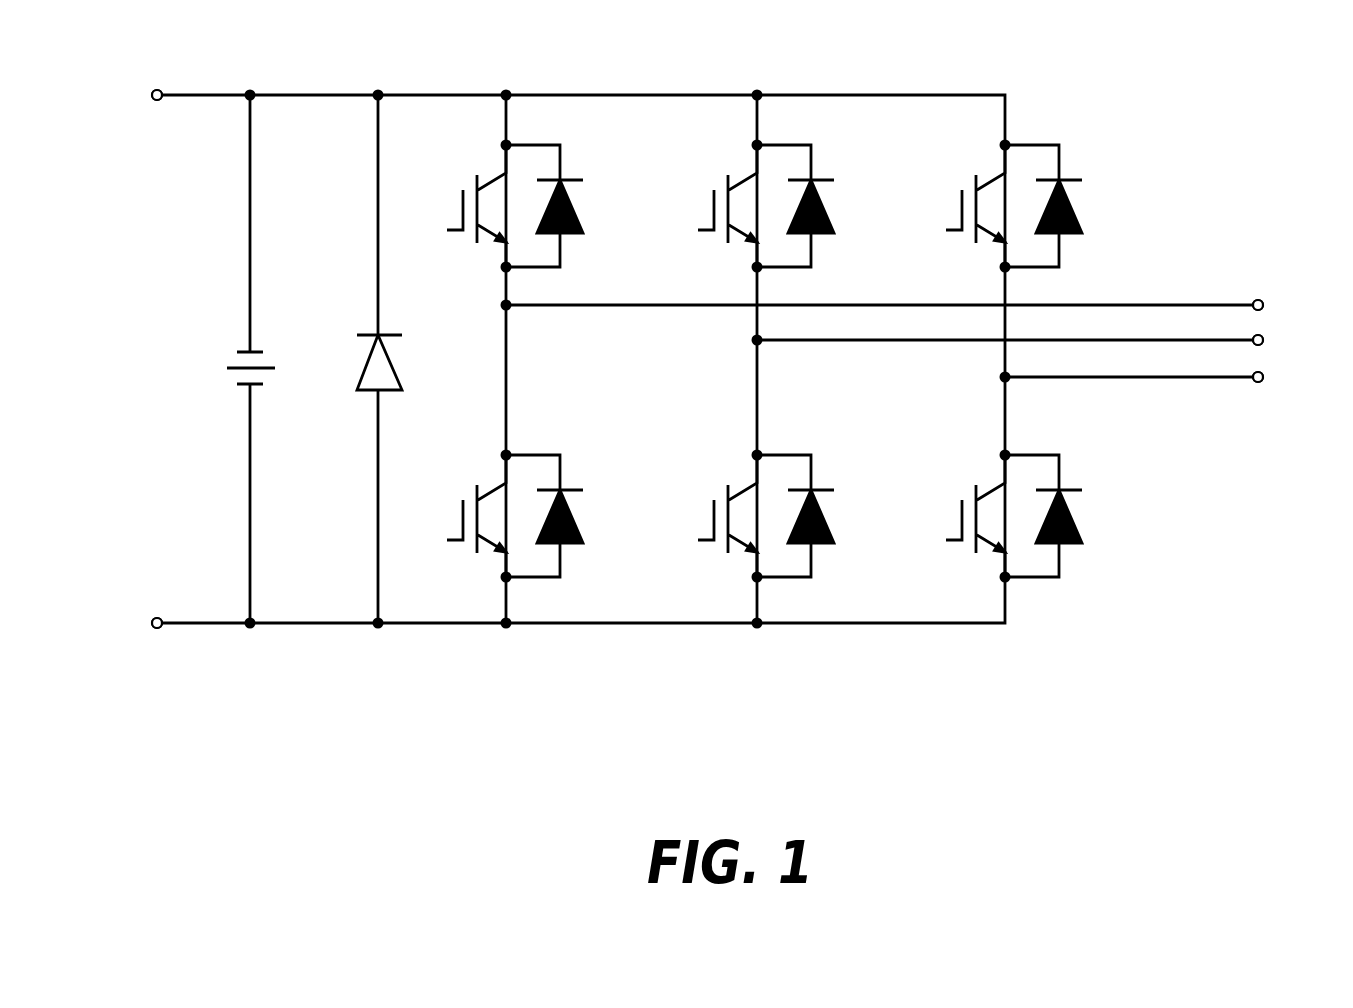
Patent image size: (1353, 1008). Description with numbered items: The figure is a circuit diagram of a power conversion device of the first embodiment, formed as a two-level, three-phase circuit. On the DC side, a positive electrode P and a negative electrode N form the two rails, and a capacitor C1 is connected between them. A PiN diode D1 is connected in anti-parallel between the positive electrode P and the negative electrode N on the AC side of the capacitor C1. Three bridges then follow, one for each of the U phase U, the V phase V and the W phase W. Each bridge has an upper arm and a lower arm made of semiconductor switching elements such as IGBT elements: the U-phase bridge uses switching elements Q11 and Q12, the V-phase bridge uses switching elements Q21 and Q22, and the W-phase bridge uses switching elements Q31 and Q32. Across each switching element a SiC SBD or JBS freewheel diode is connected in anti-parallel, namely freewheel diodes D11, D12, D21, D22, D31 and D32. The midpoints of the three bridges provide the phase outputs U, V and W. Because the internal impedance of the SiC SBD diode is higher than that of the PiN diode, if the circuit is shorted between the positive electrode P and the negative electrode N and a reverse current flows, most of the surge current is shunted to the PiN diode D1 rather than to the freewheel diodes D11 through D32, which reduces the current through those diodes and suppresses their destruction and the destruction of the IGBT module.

The capacitor C1 is at (241, 359).
The PiN diode D1 is at (360, 359).
The semiconductor switching element Q11 is at (453, 206).
The freewheel diode D11 is at (573, 206).
The semiconductor switching element Q12 is at (462, 509).
The freewheel diode D12 is at (576, 509).
The semiconductor switching element Q21 is at (705, 205).
The freewheel diode D21 is at (826, 206).
The semiconductor switching element Q22 is at (713, 509).
The freewheel diode D22 is at (827, 509).
The semiconductor switching element Q31 is at (957, 205).
The freewheel diode D31 is at (1071, 204).
The semiconductor switching element Q32 is at (966, 507).
The freewheel diode D32 is at (1072, 497).
The positive electrode P is at (143, 94).
The negative electrode N is at (143, 627).
The U phase U is at (1278, 305).
The V phase V is at (1278, 341).
The W phase W is at (1280, 378).